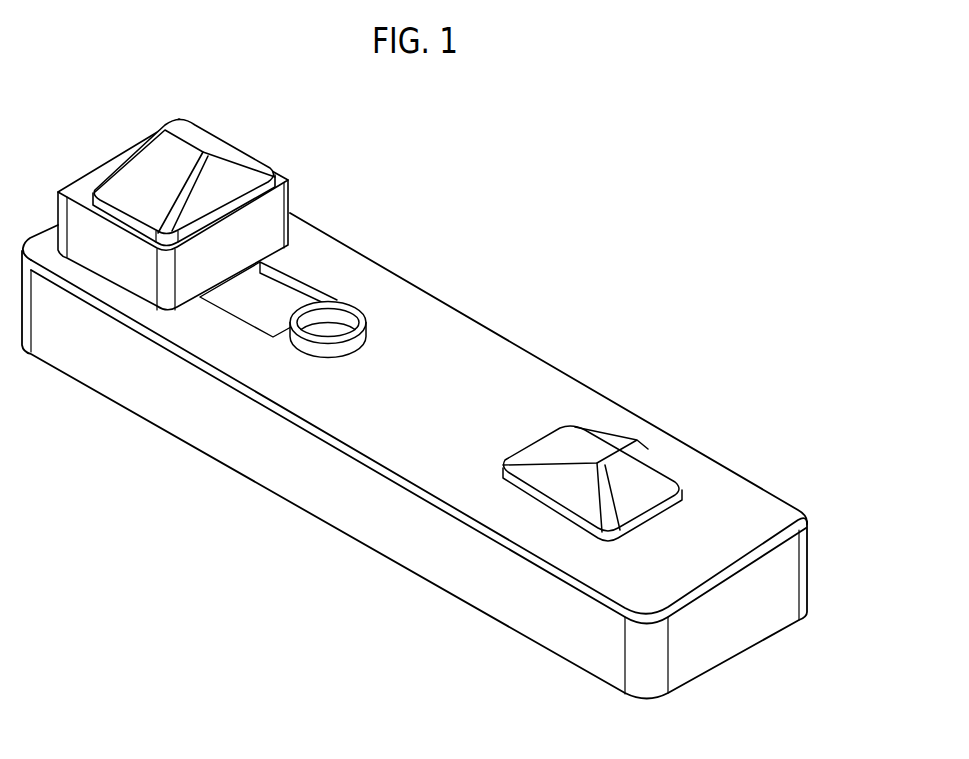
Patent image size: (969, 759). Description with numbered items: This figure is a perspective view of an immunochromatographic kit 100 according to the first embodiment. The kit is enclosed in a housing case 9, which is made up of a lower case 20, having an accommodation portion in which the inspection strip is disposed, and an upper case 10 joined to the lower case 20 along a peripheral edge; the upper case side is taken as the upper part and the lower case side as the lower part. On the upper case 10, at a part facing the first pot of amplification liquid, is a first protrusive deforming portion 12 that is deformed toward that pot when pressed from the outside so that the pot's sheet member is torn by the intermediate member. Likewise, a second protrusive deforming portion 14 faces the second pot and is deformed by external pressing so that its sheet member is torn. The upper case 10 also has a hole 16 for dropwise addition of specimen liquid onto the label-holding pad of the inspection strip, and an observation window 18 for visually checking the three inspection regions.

The immunochromatographic kit 100 is at (443, 388).
The housing case 9 is at (443, 388).
The upper case 10 is at (416, 346).
The lower case 20 is at (787, 583).
The first protrusive deforming portion 12 is at (222, 145).
The second protrusive deforming portion 14 is at (602, 445).
The hole 16 is at (346, 308).
The observation window 18 is at (278, 308).